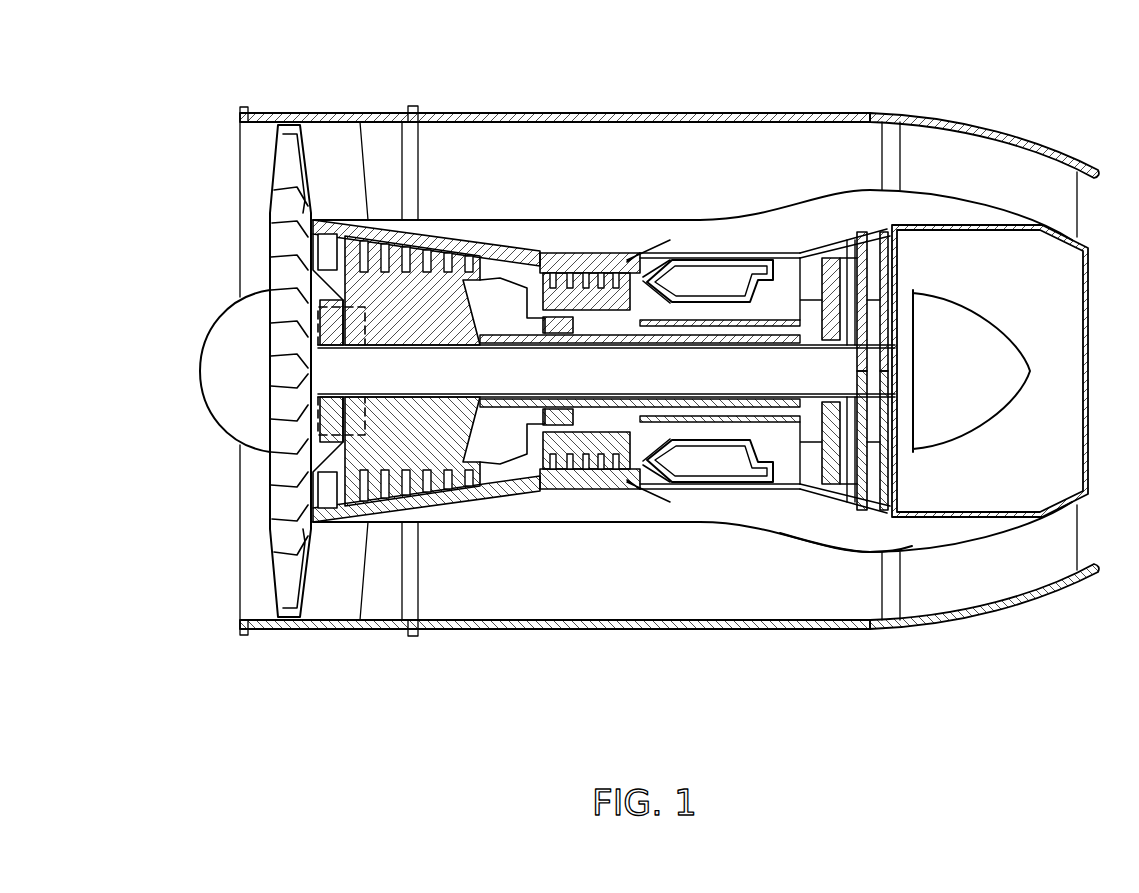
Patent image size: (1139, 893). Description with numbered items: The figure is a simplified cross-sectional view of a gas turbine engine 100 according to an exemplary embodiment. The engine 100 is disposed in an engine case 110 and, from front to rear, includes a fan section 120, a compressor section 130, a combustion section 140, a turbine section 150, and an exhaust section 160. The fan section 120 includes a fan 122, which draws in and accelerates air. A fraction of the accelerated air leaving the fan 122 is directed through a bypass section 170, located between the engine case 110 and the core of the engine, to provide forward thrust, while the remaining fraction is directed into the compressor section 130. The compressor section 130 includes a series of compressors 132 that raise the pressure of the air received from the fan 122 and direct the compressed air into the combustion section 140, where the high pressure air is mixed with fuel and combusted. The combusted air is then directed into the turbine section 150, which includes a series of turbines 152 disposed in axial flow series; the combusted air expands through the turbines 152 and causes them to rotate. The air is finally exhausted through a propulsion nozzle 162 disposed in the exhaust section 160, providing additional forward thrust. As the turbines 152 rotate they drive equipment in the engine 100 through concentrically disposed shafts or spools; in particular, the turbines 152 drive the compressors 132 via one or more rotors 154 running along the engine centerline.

The gas turbine engine 100 is at (912, 74).
The engine case 110 is at (484, 111).
The fan section 120 is at (195, 663).
The fan 122 is at (278, 215).
The compressor section 130 is at (325, 663).
The compressors 132 is at (443, 323).
The combustion section 140 is at (748, 663).
The turbine section 150 is at (913, 663).
The turbines 152 is at (912, 520).
The rotors 154 is at (508, 347).
The exhaust section 160 is at (915, 663).
The propulsion nozzle 162 is at (1001, 174).
The bypass section 170 is at (618, 149).